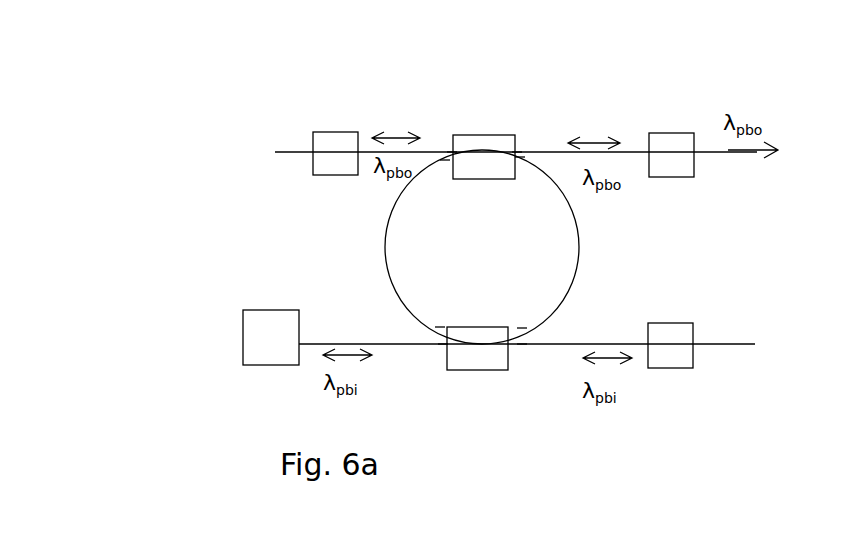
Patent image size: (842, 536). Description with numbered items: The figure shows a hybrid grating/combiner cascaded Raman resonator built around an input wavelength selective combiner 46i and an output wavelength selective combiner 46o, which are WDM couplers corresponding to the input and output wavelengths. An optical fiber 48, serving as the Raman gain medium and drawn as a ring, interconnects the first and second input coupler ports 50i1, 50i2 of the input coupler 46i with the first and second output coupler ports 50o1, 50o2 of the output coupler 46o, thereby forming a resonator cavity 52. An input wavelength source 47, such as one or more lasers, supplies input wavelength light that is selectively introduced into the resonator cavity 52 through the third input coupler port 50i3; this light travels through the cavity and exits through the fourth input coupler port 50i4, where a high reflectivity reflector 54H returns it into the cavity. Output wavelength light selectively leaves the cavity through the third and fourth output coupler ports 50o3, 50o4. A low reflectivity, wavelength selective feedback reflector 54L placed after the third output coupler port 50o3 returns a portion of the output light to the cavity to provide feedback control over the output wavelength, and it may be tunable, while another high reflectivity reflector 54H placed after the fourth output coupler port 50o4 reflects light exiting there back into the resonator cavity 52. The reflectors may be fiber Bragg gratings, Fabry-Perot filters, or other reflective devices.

The output wavelength selective combiner 46o is at (493, 104).
The input wavelength selective combiner 46i is at (487, 375).
The optical fiber 48 is at (400, 197).
The input wavelength source 47 is at (282, 365).
The resonator cavity 52 is at (703, 256).
The high reflectivity reflector 54H is at (320, 132).
The low reflectivity reflector 54L is at (665, 133).
The first output wavelength WDM coupler port 50o1 is at (445, 160).
The second output wavelength WDM coupler port 50o2 is at (520, 157).
The third output wavelength WDM coupler port 50o3 is at (517, 153).
The fourth output wavelength WDM coupler port 50o4 is at (452, 153).
The first input wavelength WDM coupler port 50i1 is at (522, 328).
The second input wavelength WDM coupler port 50i2 is at (440, 327).
The third input coupler port 50i3 is at (443, 345).
The fourth input coupler port 50i4 is at (522, 345).